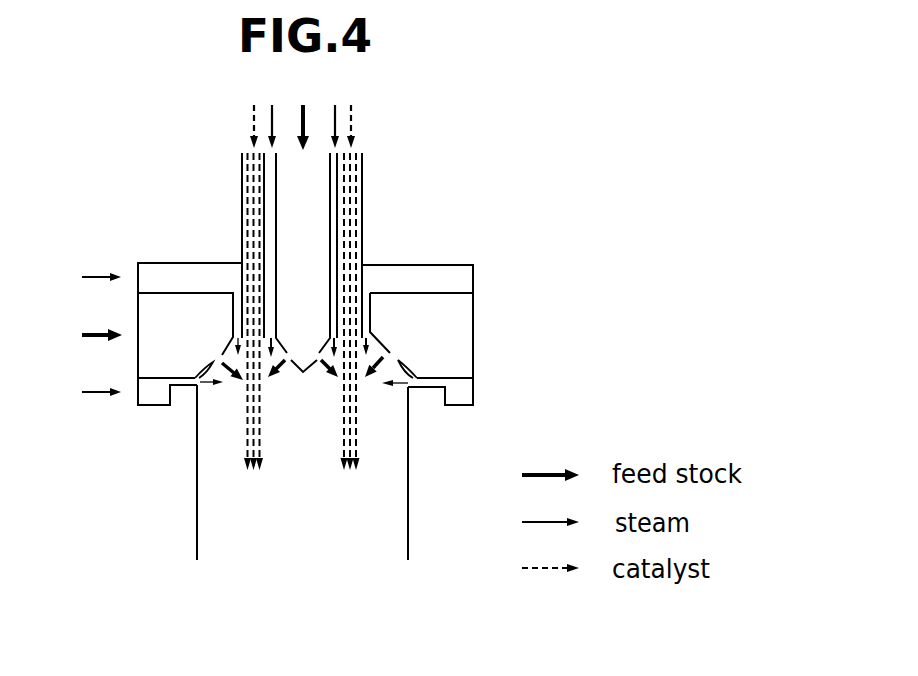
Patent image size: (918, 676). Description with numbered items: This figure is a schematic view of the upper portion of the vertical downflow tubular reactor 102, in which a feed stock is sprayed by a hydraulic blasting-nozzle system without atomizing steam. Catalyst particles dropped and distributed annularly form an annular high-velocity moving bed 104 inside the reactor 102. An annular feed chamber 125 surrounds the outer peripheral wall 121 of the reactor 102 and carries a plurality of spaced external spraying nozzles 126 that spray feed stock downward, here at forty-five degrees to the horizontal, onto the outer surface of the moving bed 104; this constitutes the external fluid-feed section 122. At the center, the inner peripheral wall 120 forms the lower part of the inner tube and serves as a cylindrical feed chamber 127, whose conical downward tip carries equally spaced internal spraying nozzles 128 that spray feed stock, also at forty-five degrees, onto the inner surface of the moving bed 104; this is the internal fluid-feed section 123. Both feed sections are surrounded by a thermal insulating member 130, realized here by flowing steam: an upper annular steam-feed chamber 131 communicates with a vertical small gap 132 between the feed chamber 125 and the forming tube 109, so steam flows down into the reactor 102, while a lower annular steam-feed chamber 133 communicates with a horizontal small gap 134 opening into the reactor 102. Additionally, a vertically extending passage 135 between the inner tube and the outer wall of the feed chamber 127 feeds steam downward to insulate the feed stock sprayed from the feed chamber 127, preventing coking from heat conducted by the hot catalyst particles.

The reactor 102 is at (196, 490).
The annular high-velocity moving bed 104 is at (363, 433).
The forming tube 109 is at (371, 173).
The inner peripheral wall 120 is at (303, 372).
The outer peripheral wall 121 is at (205, 366).
The external fluid-feed section 122 is at (162, 248).
The internal fluid-feed section 123 is at (285, 418).
The annular feed chamber 125 is at (189, 344).
The external spraying nozzles 126 is at (213, 347).
The cylindrical feed chamber 127 is at (318, 292).
The internal spraying nozzles 128 is at (312, 344).
The thermal insulating member 130 is at (486, 275).
The upper annular steam-feed chamber 131 is at (433, 272).
The small gap 132 is at (363, 320).
The lower annular steam-feed chamber 133 is at (466, 397).
The small gap 134 is at (430, 387).
The vertically extending passage 135 is at (332, 198).